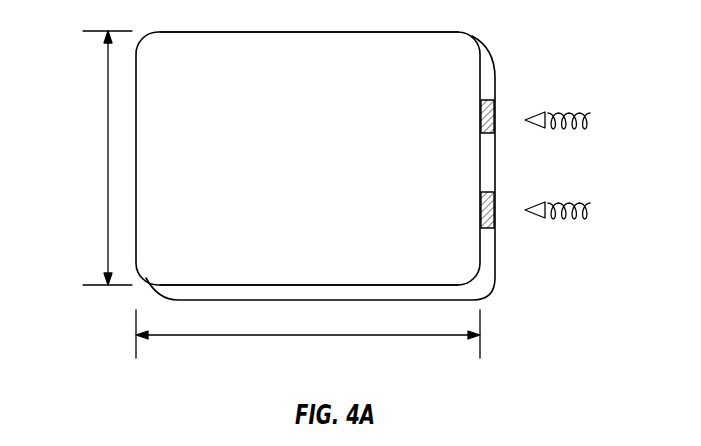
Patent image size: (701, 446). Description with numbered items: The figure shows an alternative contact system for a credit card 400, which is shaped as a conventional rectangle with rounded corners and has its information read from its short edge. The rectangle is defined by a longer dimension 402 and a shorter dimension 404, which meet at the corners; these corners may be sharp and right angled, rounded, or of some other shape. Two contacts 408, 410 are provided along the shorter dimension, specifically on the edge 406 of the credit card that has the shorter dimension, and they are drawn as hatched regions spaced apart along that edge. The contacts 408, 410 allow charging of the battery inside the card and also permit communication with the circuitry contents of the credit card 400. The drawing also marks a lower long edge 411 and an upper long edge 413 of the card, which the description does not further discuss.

The credit card 400 is at (196, 40).
The longer dimension 402 is at (308, 337).
The shorter dimension 404 is at (107, 158).
The edge 406 is at (486, 75).
The contact 408 is at (480, 118).
The contact 410 is at (480, 210).
The bottom edge 411 is at (388, 284).
The top edge 413 is at (318, 33).